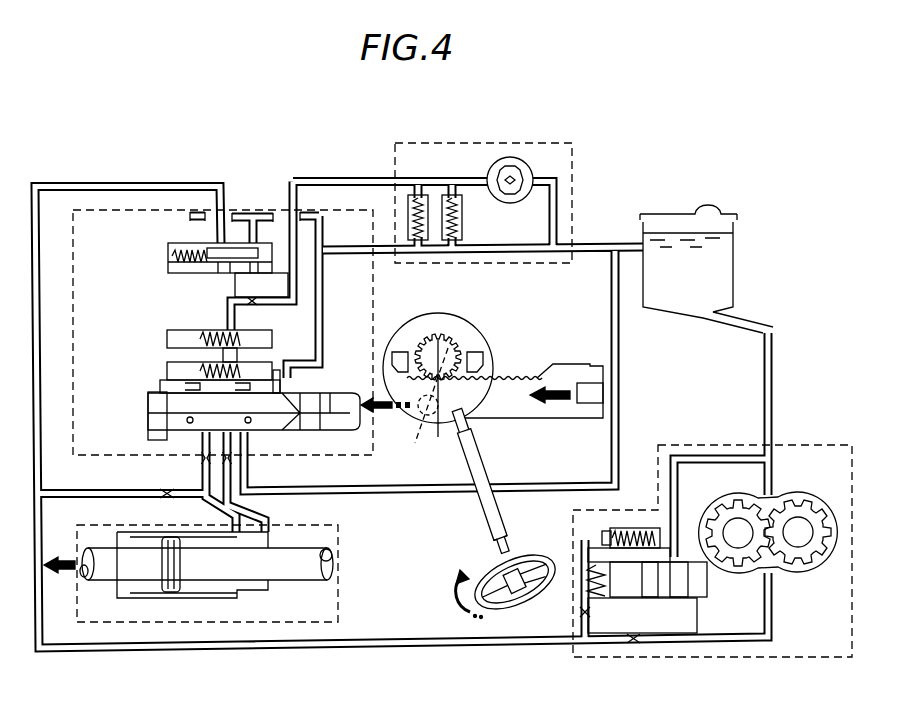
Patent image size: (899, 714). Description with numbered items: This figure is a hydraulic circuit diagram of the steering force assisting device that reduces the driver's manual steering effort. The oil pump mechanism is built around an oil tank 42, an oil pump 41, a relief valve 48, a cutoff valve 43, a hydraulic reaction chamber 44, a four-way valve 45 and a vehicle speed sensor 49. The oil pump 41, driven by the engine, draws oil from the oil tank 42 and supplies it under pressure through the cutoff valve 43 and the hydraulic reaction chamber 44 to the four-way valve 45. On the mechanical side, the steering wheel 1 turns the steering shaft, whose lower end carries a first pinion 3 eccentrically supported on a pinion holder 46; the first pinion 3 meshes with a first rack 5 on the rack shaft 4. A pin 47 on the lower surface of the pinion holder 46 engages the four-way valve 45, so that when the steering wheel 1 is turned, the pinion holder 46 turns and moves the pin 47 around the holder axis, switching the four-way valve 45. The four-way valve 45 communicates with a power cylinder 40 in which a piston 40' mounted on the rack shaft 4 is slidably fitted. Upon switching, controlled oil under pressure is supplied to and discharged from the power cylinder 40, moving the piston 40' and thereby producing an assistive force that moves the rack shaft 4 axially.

The steering wheel 1 is at (520, 603).
The first pinion 3 is at (420, 332).
The rack shaft 4 is at (539, 418).
The first rack 5 is at (530, 378).
The power cylinder 40 is at (192, 610).
The piston 40' is at (150, 613).
The oil pump 41 is at (815, 518).
The oil tank 42 is at (733, 258).
The cutoff valve 43 is at (197, 248).
The hydraulic reaction chamber 44 is at (210, 336).
The four-way valve 45 is at (345, 422).
The pinion holder 46 is at (486, 332).
The pin 47 is at (458, 430).
The relief valve 48 is at (657, 598).
The vehicle speed sensor 49 is at (522, 160).